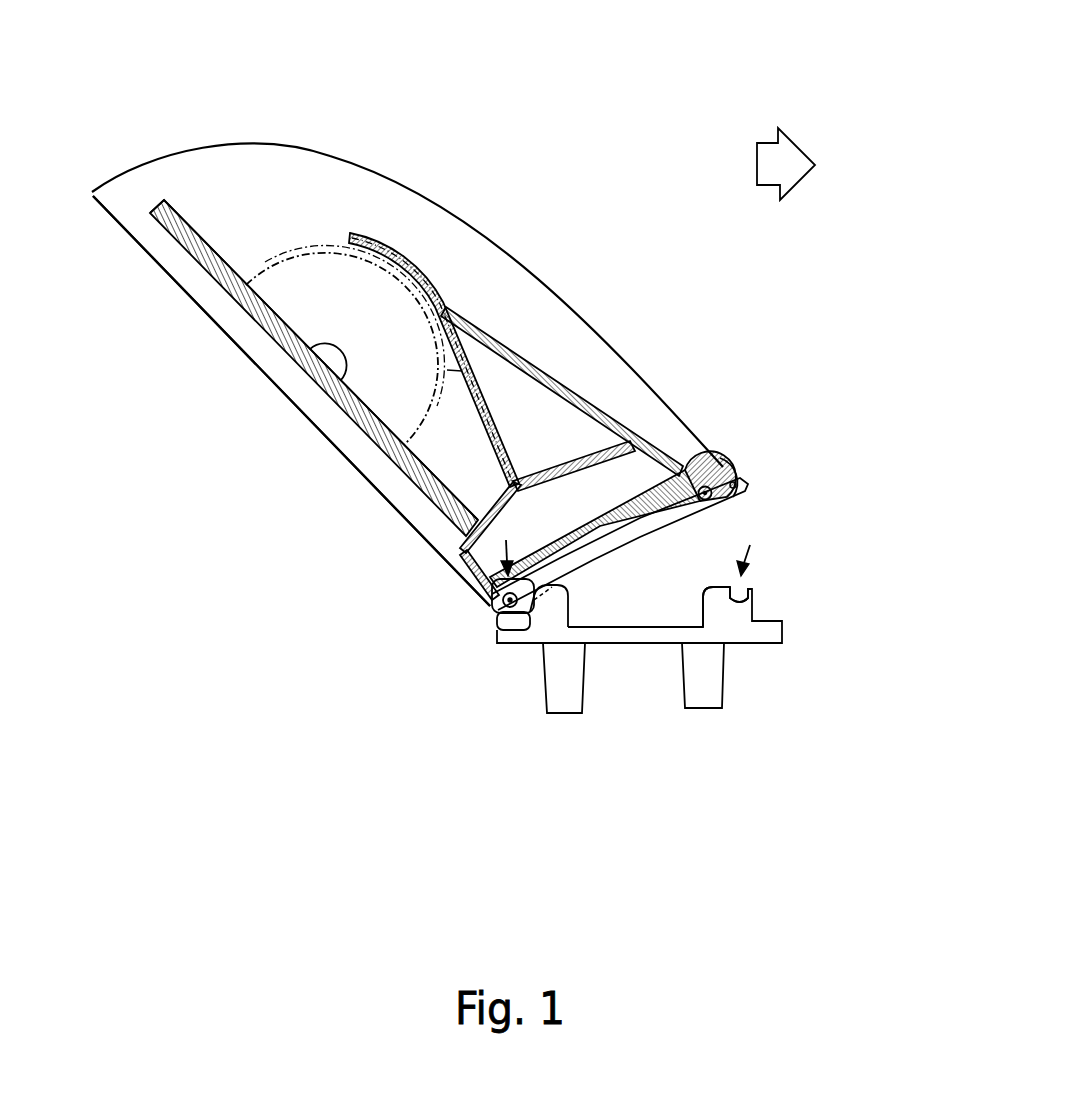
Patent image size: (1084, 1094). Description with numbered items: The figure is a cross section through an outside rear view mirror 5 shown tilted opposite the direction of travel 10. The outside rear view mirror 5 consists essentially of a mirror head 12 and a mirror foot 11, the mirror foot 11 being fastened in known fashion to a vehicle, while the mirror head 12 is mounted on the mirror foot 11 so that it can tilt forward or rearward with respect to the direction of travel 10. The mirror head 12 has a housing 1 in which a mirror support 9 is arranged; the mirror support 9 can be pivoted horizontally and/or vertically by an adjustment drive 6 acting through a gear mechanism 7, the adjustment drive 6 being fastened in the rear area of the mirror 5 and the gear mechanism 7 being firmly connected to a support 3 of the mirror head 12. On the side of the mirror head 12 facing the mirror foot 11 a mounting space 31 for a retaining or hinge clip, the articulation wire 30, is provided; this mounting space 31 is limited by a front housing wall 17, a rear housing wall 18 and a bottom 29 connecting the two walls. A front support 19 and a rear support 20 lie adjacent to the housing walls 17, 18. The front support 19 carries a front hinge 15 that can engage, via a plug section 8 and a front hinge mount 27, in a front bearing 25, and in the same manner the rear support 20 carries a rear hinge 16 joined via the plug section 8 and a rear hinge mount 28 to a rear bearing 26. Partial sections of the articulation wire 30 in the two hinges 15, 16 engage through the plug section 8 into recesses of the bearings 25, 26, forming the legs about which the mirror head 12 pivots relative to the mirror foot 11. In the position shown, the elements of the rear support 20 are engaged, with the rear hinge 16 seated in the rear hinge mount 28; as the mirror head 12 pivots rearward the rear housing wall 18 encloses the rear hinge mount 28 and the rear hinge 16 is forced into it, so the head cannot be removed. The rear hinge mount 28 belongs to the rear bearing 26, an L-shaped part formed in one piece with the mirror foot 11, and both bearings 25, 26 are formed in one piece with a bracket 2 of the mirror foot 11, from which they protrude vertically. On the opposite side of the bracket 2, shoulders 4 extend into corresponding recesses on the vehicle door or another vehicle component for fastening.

The housing 1 is at (335, 157).
The bracket 2 is at (704, 631).
The support 3 is at (563, 383).
The shoulders 4 is at (704, 686).
The outside rear view mirror 5 is at (170, 325).
The adjustment drive 6 is at (262, 268).
The gear mechanism 7 is at (378, 262).
The plug section 8 is at (880, 605).
The mirror support 9 is at (172, 236).
The direction of travel 10 is at (795, 158).
The mirror foot 11 is at (650, 708).
The mirror head 12 is at (245, 420).
The front hinge 15 is at (802, 375).
The rear hinge 16 is at (492, 614).
The front housing wall 17 is at (720, 478).
The rear housing wall 18 is at (490, 600).
The front support 19 is at (768, 496).
The rear support 20 is at (497, 620).
The front bearing 25 is at (716, 613).
The rear bearing 26 is at (550, 603).
The front hinge mount 27 is at (749, 595).
The rear hinge mount 28 is at (480, 645).
The bottom 29 is at (617, 517).
The articulation wire 30 is at (669, 514).
The mounting space 31 is at (736, 480).